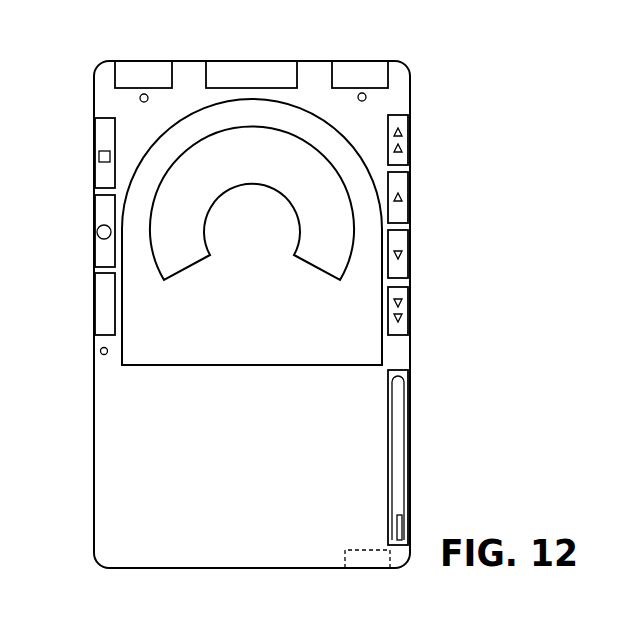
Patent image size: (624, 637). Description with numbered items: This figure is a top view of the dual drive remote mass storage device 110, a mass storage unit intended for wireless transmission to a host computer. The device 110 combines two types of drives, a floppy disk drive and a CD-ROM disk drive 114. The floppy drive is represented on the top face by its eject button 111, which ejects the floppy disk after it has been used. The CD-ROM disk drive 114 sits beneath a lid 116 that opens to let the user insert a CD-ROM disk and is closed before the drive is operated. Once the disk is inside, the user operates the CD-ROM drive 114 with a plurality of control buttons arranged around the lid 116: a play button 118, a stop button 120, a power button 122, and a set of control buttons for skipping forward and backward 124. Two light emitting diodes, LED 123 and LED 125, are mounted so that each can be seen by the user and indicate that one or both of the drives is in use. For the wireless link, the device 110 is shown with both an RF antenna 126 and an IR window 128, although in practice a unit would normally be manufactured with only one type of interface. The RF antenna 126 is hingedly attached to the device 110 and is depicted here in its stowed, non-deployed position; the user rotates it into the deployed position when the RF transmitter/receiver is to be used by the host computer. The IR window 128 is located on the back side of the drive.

The dual drive remote mass storage device 110 is at (447, 129).
The eject button 111 is at (142, 70).
The CD-ROM disk drive 114 is at (187, 252).
The lid 116 is at (357, 352).
The play button 118 is at (100, 137).
The stop button 120 is at (100, 210).
The power button 122 is at (100, 293).
The LED 123 is at (366, 96).
The control buttons for skipping forward and backward 124 is at (403, 208).
The LED 125 is at (140, 98).
The RF antenna 126 is at (403, 410).
The IR window 128 is at (362, 550).